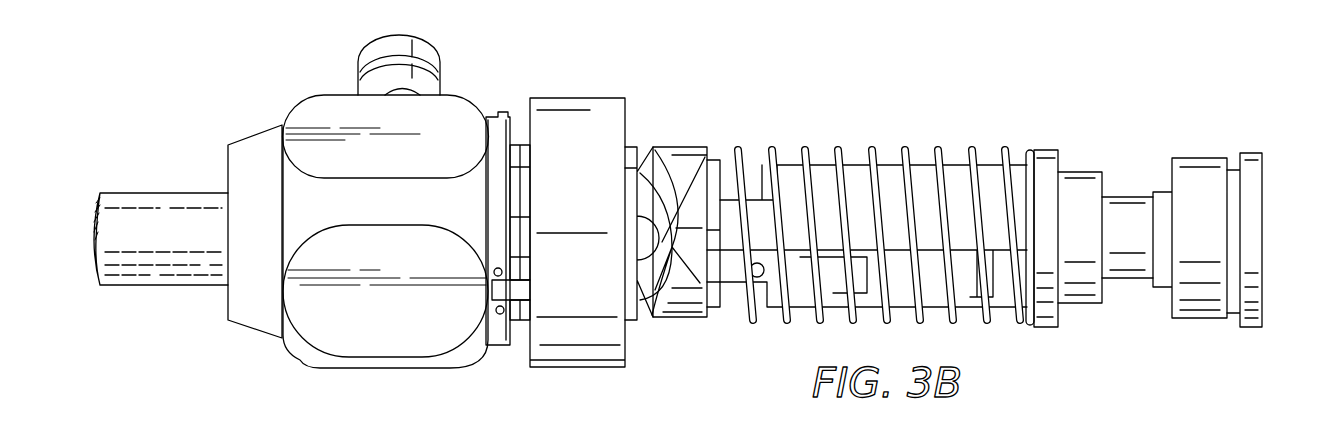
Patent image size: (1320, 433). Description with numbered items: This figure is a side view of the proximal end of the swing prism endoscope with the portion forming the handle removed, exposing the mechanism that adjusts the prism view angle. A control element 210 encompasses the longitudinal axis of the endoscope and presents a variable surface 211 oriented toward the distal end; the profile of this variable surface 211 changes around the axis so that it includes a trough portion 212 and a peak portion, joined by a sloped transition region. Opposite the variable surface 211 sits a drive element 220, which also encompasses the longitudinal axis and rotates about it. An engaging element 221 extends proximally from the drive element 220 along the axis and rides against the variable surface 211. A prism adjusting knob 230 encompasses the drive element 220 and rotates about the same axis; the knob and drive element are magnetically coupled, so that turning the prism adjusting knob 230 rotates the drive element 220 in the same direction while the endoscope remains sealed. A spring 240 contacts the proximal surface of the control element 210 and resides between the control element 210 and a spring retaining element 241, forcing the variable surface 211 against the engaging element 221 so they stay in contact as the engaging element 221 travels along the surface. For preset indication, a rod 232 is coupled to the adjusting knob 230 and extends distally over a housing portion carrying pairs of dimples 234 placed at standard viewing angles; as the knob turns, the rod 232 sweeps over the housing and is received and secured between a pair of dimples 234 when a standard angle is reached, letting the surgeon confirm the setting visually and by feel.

The control element 210 is at (680, 147).
The variable surface 211 is at (640, 172).
The trough portion 212 is at (705, 157).
The drive element 220 is at (633, 313).
The engaging element 221 is at (670, 312).
The prism adjusting knob 230 is at (580, 110).
The rod 232 is at (523, 290).
The dimples 234 is at (492, 303).
The spring 240 is at (843, 152).
The spring retaining element 241 is at (1047, 158).